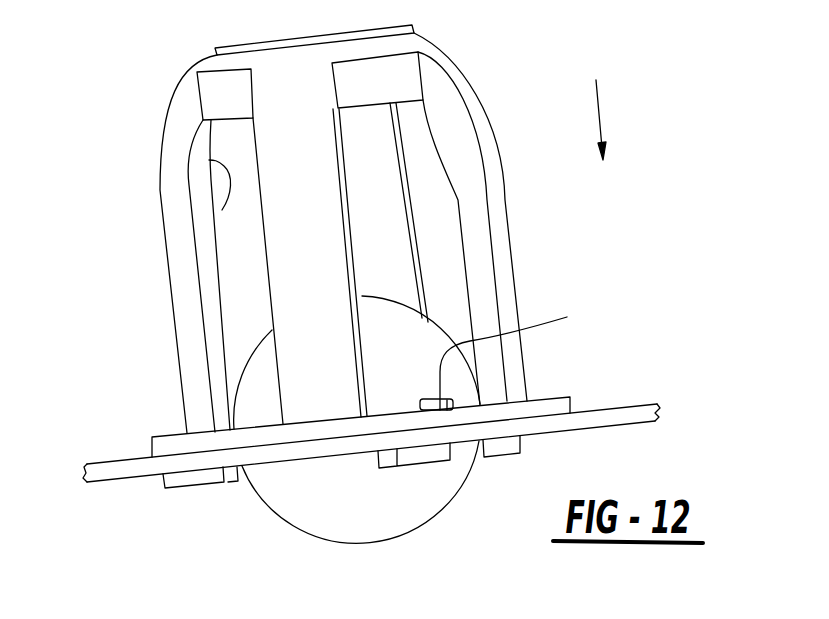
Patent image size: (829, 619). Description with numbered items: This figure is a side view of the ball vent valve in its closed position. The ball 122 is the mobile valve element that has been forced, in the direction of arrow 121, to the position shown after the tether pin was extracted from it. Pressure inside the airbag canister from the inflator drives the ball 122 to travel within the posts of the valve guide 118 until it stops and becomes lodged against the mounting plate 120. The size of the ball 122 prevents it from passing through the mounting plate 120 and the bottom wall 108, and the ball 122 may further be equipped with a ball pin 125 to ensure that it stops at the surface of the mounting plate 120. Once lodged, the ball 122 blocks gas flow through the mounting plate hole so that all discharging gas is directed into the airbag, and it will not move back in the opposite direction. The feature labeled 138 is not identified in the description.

The bottom wall 108 is at (635, 421).
The valve guide 118 is at (165, 131).
The mounting plate 120 is at (568, 397).
The arrow 121 is at (600, 121).
The ball 122 is at (437, 323).
The ball pin 125 is at (513, 356).
The loop / hook 138 is at (222, 210).